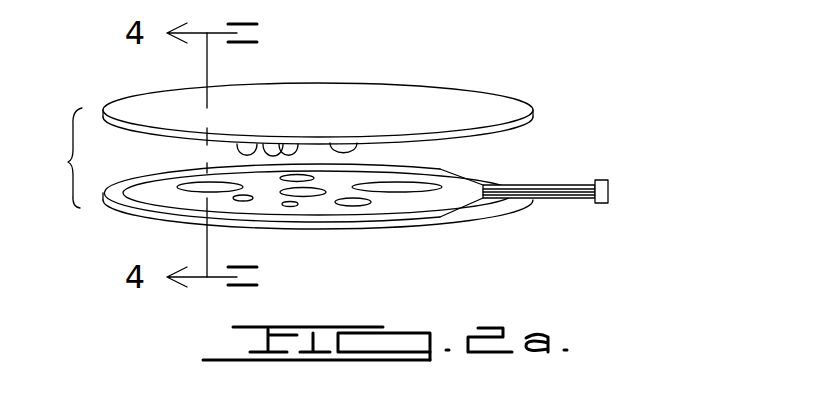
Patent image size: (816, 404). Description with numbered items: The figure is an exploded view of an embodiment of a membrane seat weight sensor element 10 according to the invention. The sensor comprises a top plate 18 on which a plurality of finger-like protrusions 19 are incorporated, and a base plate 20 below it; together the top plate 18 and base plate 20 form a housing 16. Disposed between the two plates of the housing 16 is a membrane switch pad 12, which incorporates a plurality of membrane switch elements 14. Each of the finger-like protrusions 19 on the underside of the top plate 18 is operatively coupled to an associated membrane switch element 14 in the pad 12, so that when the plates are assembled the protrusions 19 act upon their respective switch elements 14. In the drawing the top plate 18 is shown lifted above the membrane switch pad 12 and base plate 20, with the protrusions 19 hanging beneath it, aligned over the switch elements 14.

The seat weight sensor 10 is at (563, 78).
The membrane switch pad 12 is at (455, 195).
The membrane switch elements 14 is at (412, 187).
The housing 16 is at (56, 158).
The top plate 18 is at (455, 103).
The protrusions 19 is at (330, 147).
The base plate 20 is at (498, 212).